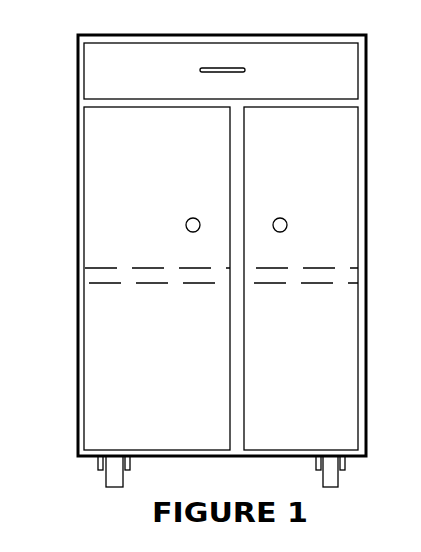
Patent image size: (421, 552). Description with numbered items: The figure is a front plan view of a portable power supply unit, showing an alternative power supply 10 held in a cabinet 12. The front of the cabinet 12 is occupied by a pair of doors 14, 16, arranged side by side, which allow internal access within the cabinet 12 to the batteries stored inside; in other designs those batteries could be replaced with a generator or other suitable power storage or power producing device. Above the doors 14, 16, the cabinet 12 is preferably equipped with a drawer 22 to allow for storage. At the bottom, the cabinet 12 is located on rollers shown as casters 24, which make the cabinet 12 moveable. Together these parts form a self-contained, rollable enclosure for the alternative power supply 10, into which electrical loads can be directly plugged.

The alternative power supply 10 is at (202, 247).
The cabinet 12 is at (77, 92).
The door 14 is at (157, 278).
The door 16 is at (301, 278).
The drawer 22 is at (221, 71).
The casters 24 is at (323, 474).